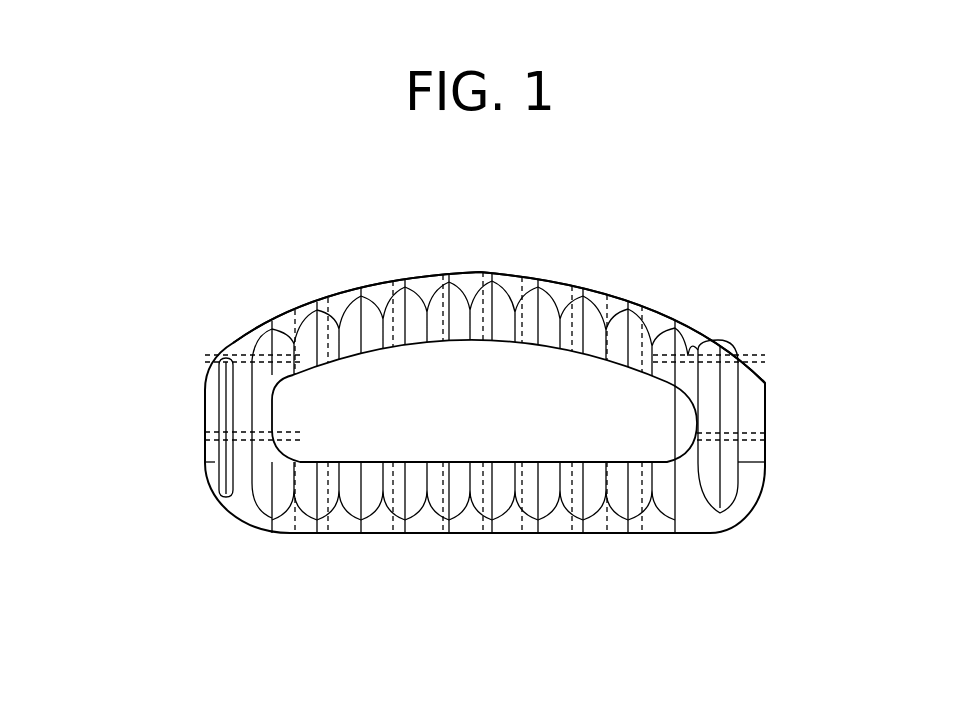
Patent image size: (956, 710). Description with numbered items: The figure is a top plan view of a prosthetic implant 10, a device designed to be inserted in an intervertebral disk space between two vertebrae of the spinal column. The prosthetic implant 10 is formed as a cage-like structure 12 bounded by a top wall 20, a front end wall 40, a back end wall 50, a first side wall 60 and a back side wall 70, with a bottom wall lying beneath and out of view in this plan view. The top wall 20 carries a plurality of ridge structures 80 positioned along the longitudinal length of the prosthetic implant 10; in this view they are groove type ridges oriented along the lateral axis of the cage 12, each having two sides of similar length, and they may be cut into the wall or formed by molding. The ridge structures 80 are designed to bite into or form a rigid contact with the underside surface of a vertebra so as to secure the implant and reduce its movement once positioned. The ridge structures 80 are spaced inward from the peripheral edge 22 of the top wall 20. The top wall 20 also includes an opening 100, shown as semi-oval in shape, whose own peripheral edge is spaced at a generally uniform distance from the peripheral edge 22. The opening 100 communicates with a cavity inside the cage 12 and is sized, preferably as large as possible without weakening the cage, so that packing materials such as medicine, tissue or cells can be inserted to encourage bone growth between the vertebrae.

The prosthetic implant 10 is at (567, 228).
The cage-like structure 12 is at (267, 323).
The top wall 20 is at (700, 512).
The peripheral edge 22 is at (340, 292).
The front end wall 40 is at (767, 417).
The back end wall 50 is at (205, 428).
The first side wall 60 is at (430, 275).
The back side wall 70 is at (473, 532).
The ridge structures 80 is at (628, 322).
The opening 100 is at (662, 404).